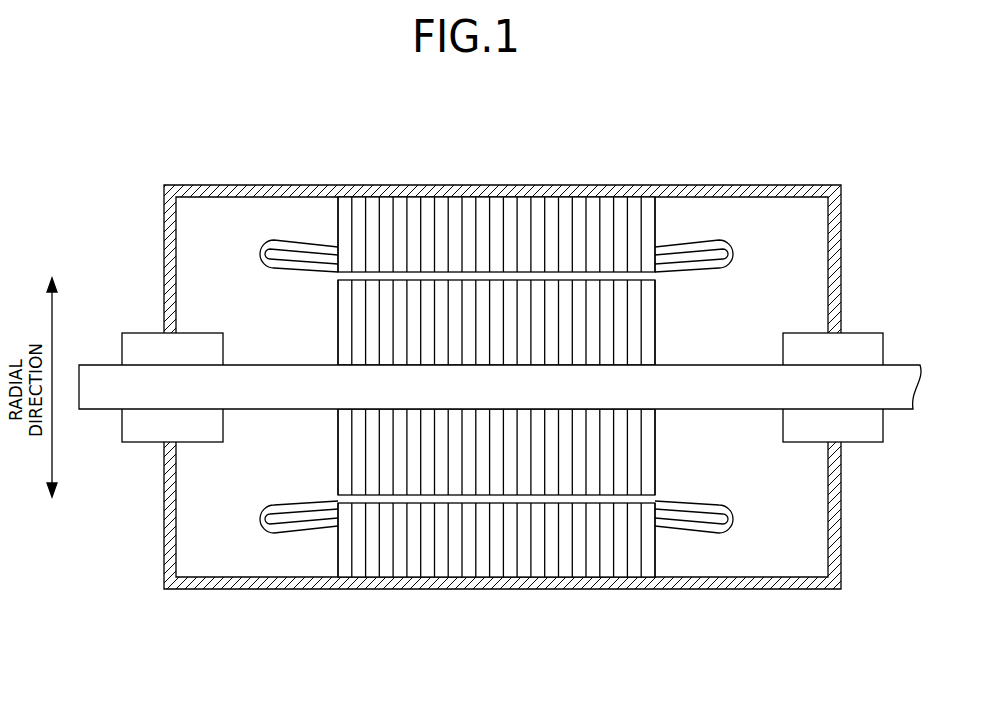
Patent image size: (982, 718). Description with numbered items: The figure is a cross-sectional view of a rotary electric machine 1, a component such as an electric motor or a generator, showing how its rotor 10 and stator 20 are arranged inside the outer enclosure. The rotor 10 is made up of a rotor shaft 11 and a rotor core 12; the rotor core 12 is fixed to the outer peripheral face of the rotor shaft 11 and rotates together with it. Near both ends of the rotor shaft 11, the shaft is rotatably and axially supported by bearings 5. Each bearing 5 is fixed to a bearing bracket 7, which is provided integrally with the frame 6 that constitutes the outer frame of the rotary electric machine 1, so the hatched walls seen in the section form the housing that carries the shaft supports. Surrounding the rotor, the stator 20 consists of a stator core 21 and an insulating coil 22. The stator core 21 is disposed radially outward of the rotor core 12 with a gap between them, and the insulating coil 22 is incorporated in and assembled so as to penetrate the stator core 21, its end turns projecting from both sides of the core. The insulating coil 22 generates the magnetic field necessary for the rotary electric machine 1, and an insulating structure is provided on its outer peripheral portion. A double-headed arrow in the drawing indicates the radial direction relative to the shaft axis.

The rotary electric machine 1 is at (502, 375).
The bearing 5 is at (138, 442).
The frame 6 is at (497, 589).
The bearing bracket 7 is at (164, 545).
The rotor 10 is at (500, 489).
The rotor shaft 11 is at (768, 409).
The rotor core 12 is at (655, 450).
The stator 20 is at (496, 449).
The stator core 21 is at (337, 550).
The insulating coil 22 is at (280, 533).